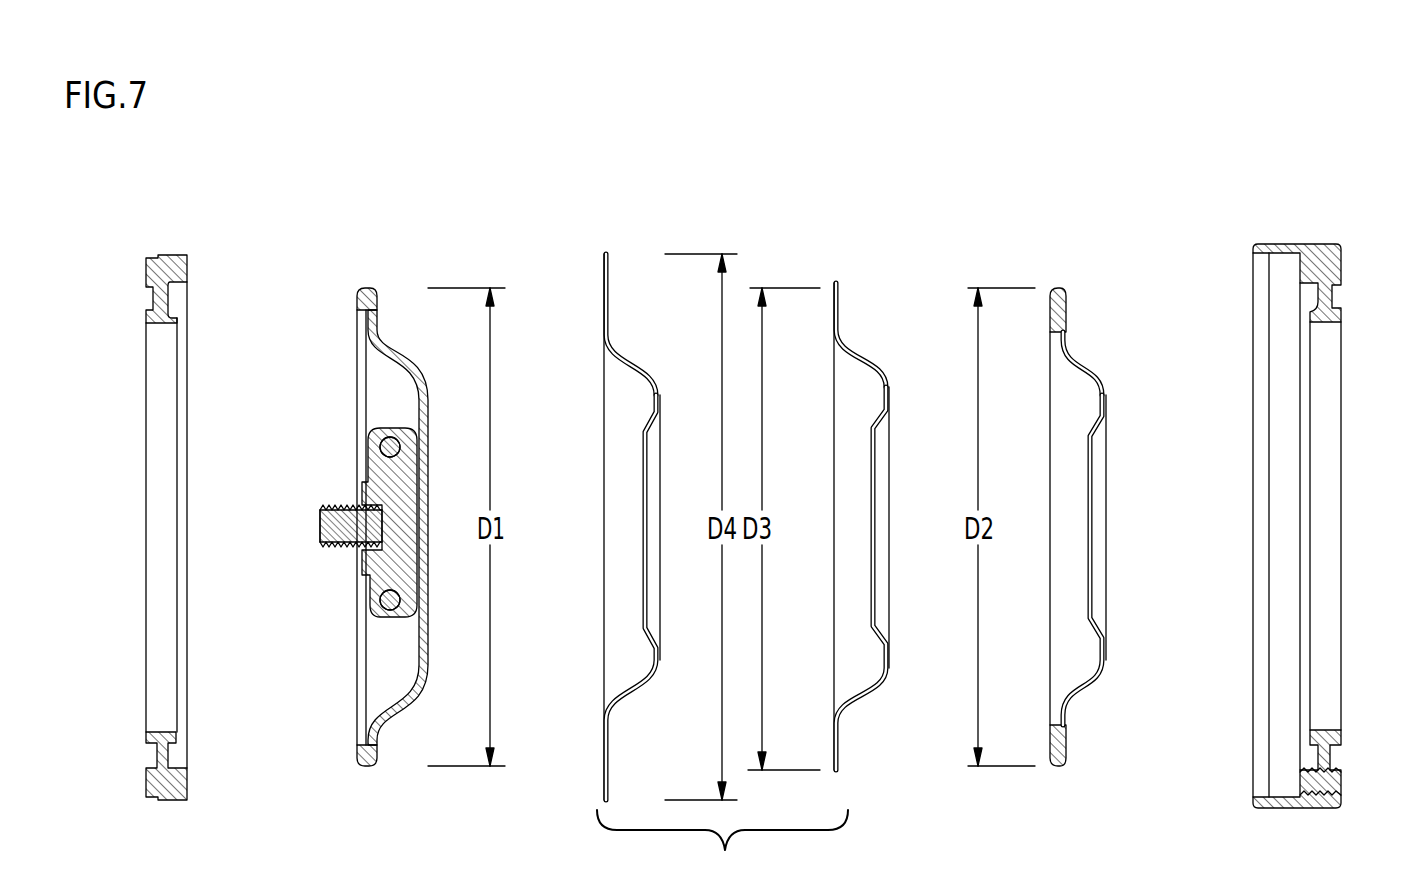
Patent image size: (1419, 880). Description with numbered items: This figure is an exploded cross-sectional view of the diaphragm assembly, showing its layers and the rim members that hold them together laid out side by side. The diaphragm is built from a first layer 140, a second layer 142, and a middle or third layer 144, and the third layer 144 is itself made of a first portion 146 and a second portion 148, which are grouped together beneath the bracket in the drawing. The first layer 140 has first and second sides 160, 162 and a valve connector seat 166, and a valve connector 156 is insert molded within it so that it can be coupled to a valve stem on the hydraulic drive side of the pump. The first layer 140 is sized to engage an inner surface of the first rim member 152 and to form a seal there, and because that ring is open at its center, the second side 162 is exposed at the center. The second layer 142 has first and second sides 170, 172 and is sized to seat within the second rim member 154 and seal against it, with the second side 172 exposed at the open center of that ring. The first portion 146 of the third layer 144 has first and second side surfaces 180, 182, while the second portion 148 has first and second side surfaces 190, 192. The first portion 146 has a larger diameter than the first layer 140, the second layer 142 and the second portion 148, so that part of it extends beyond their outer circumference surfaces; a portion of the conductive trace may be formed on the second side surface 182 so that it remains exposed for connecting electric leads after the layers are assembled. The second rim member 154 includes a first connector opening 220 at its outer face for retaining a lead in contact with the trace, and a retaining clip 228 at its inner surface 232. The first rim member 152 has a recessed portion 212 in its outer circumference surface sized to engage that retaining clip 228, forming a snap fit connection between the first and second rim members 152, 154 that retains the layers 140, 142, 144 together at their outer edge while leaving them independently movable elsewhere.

The first layer 140 is at (386, 489).
The second layer 142 is at (1084, 490).
The third layer 144 is at (722, 845).
The first portion of third layer 146 is at (635, 488).
The second portion of third layer 148 is at (866, 492).
The first rim member 152 is at (185, 485).
The second rim member 154 is at (1296, 492).
The valve connector 156 is at (325, 548).
The first side of first layer 160 is at (412, 372).
The second side of first layer 162 is at (422, 438).
The valve connector seat 166 is at (397, 582).
The first side of second layer 170 is at (1068, 408).
The second side of second layer 172 is at (1103, 470).
The first side surface of first portion 180 is at (630, 380).
The second side surface of first portion 182 is at (653, 450).
The first side surface of second portion 190 is at (861, 512).
The second side surface of second portion 192 is at (887, 514).
The recessed portion 212 is at (156, 255).
The first connector opening 220 is at (1334, 797).
The retaining clip 228 is at (1262, 257).
The inner surface of second rim member 232 is at (1282, 660).